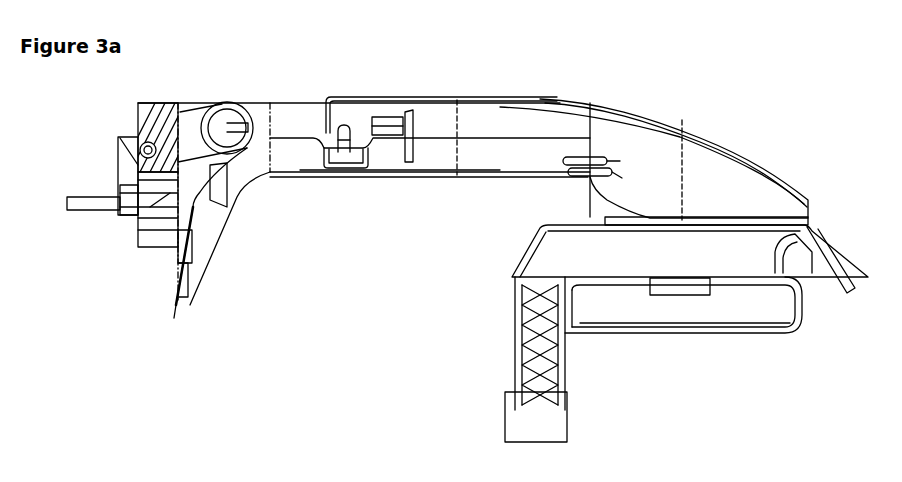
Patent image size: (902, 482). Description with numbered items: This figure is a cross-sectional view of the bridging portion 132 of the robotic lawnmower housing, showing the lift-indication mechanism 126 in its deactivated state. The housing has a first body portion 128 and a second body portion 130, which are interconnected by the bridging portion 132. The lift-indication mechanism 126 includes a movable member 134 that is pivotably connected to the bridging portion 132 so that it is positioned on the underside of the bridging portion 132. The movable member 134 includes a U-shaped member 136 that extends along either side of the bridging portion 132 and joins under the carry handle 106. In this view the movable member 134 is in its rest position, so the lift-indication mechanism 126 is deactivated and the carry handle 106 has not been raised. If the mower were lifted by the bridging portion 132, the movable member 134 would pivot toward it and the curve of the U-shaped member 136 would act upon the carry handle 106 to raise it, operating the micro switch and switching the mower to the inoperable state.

The carry handle 106 is at (230, 103).
The lift-indication mechanism 126 is at (325, 220).
The first body portion 128 is at (158, 102).
The second body portion 130 is at (720, 142).
The bridging portion 132 is at (397, 97).
The movable member 134 is at (427, 177).
The U-shaped member 136 is at (225, 192).